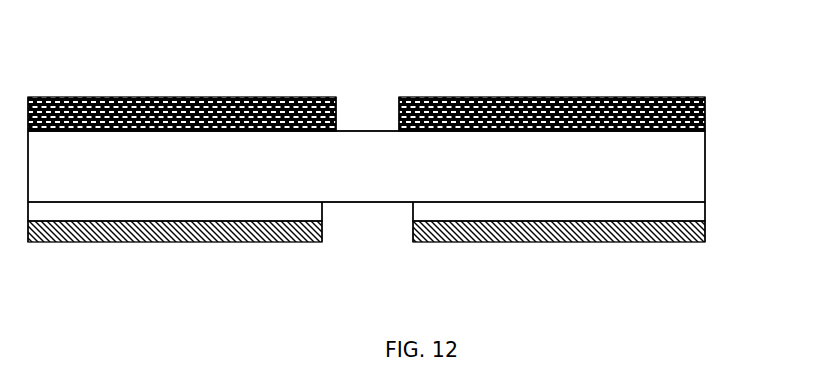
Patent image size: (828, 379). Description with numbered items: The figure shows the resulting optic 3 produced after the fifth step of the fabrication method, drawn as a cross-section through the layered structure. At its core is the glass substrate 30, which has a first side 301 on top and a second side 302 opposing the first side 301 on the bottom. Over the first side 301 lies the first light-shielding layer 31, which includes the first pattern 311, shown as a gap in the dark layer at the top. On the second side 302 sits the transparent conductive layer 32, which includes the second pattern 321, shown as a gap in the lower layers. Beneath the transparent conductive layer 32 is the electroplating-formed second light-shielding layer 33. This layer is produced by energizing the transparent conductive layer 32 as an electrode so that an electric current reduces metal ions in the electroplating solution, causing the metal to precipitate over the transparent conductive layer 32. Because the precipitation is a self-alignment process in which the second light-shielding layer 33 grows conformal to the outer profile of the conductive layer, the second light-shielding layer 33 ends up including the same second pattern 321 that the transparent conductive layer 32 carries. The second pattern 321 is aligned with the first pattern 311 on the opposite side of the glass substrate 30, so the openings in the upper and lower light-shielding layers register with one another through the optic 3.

The optic 3 is at (406, 159).
The glass substrate 30 is at (685, 150).
The first side 301 is at (705, 104).
The second side 302 is at (692, 207).
The first light-shielding layer 31 is at (618, 100).
The first pattern 311 is at (372, 106).
The transparent conductive layer 32 is at (620, 210).
The second pattern 321 is at (358, 209).
The second light-shielding layer 33 is at (688, 240).